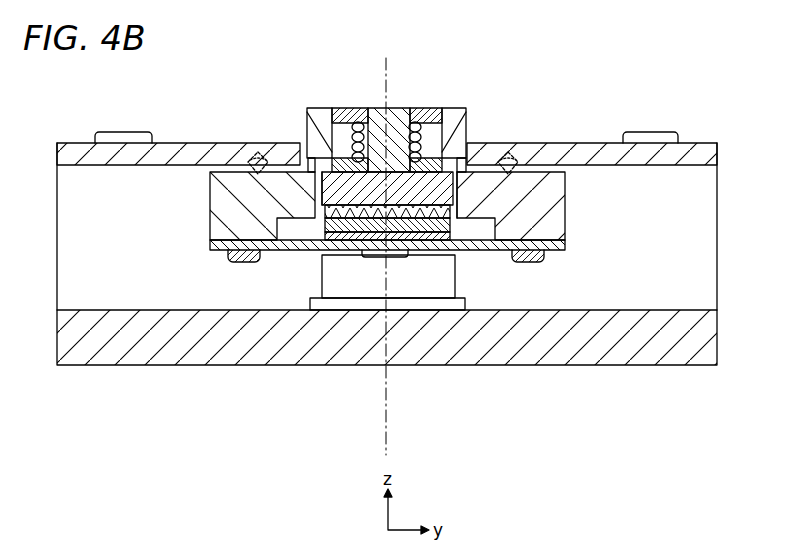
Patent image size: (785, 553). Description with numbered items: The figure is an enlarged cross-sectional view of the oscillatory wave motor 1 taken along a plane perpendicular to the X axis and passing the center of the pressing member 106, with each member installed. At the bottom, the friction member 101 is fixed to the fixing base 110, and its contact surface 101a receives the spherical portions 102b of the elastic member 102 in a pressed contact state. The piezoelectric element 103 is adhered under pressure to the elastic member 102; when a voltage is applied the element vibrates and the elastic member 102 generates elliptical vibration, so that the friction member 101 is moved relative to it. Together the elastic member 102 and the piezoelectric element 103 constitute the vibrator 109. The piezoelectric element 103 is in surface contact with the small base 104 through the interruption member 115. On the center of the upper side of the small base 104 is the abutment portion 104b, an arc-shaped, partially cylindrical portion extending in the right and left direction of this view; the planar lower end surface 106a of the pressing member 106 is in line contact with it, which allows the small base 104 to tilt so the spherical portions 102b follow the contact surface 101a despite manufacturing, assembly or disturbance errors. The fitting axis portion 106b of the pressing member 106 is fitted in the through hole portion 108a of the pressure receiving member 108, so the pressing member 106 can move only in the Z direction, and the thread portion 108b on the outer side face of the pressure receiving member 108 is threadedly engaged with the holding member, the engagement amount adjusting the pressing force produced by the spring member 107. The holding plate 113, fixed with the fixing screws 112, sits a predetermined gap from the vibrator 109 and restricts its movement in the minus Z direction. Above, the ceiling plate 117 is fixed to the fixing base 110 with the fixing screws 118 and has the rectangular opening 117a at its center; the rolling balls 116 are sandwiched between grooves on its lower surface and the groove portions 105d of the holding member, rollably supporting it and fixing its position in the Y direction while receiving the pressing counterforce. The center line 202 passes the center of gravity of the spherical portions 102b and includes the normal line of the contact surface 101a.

The oscillatory wave motor 1 is at (637, 66).
The friction member 101 is at (348, 273).
The contact surface 101a is at (328, 305).
The elastic member 102 is at (423, 253).
The spherical portions 102b is at (395, 257).
The piezoelectric element 103 is at (445, 223).
The small base 104 is at (457, 175).
The abutment portion 104b is at (448, 142).
The groove portions 105d is at (250, 190).
The pressing member 106 is at (388, 107).
The lower end surface 106a is at (373, 147).
The fitting axis portion 106b is at (400, 140).
The spring member 107 is at (357, 125).
The pressure receiving member 108 is at (333, 110).
The through hole portion 108a is at (427, 107).
The thread portion 108b is at (310, 109).
The vibrator 109 is at (510, 408).
The fixing base 110 is at (712, 363).
The fixing screws 112 is at (241, 263).
The holding plate 113 is at (455, 251).
The interruption member 115 is at (492, 180).
The rolling balls 116 is at (251, 160).
The ceiling plate 117 is at (711, 142).
The rectangular opening 117a is at (258, 150).
The fixing screws 118 is at (115, 141).
The center line 202 is at (388, 430).